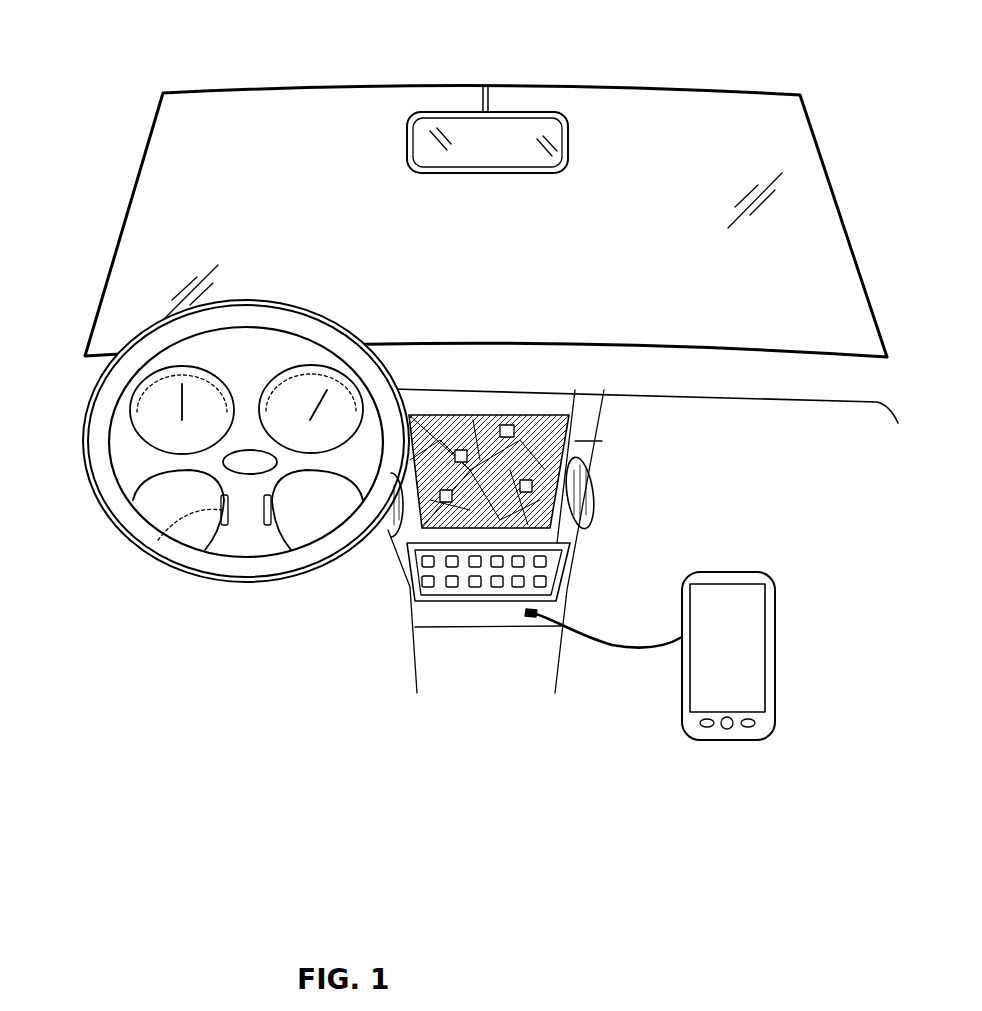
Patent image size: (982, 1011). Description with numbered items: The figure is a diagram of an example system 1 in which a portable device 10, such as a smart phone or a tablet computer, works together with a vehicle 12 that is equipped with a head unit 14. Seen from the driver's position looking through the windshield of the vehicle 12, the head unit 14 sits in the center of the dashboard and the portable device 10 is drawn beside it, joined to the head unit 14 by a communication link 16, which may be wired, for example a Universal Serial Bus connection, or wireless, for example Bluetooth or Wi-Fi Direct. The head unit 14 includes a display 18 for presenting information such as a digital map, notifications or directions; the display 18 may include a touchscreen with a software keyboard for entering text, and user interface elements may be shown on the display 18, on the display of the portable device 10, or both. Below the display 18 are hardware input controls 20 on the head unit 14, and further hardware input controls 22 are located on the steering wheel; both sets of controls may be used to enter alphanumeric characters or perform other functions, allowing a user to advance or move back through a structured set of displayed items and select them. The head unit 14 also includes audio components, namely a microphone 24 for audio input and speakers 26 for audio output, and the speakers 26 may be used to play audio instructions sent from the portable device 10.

The system 1 is at (248, 44).
The portable device 10 is at (731, 572).
The vehicle 12 is at (78, 326).
The head unit 14 is at (529, 381).
The communication link 16 is at (606, 630).
The display 18 is at (557, 435).
The hardware input controls 20 is at (410, 575).
The hardware input controls 22 is at (203, 514).
The microphone 24 is at (389, 521).
The speakers 26 is at (594, 496).